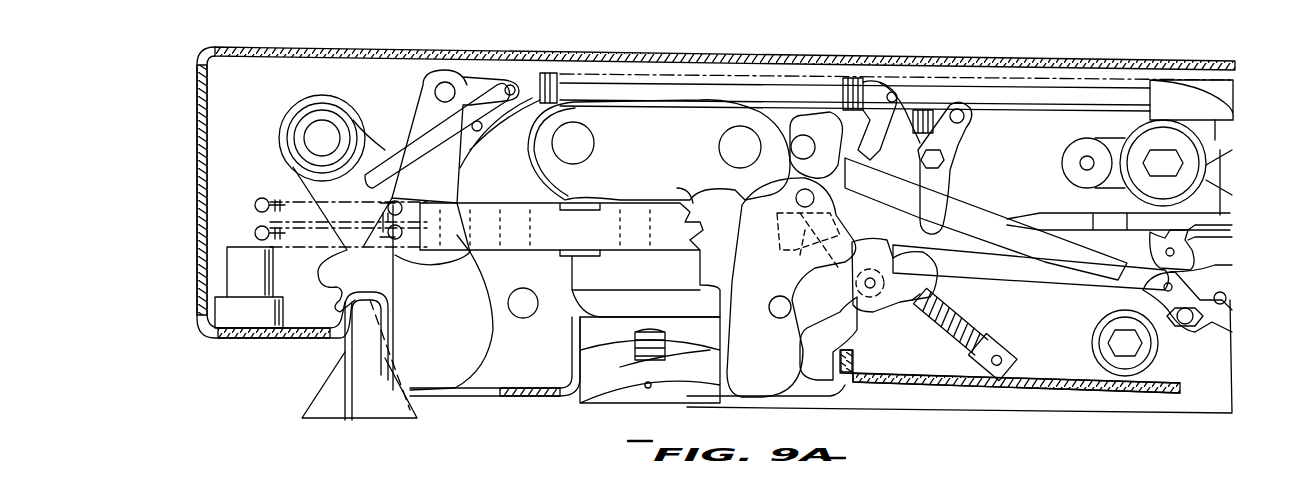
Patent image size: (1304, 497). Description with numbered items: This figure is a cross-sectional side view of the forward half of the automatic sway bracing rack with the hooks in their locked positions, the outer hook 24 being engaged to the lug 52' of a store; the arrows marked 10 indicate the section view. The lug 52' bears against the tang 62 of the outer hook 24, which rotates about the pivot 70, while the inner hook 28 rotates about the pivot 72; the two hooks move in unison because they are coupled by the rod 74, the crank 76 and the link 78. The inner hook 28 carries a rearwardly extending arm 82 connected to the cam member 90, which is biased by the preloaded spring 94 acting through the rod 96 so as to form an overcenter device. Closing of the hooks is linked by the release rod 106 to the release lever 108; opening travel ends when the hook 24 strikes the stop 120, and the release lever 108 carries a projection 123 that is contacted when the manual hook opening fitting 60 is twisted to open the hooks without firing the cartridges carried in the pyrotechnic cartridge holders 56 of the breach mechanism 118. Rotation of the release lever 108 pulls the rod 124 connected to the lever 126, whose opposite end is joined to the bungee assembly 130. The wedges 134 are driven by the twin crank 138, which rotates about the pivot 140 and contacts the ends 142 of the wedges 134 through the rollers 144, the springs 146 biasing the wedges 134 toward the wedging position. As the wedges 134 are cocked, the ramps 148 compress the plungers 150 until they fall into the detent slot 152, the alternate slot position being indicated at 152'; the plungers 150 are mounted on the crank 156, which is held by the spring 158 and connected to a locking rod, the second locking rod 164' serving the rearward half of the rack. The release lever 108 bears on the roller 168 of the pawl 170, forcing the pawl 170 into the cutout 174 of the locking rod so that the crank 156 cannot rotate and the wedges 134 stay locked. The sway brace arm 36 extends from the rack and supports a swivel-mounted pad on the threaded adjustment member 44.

The housing 10 is at (162, 60).
The outer hook 24 is at (460, 361).
The inner hook 28 is at (810, 383).
The sway brace arm 36 is at (607, 402).
The threaded adjustment member 44 is at (668, 340).
The lug 52' is at (374, 372).
The pyrotechnic cartridge holder 56 is at (1175, 193).
The manual hook opening fitting 60 is at (1205, 312).
The tang 62 is at (332, 295).
The pivot 70 is at (430, 260).
The pivot 72 is at (780, 318).
The rod 74 is at (477, 82).
The crank 76 is at (822, 122).
The link 78 is at (770, 180).
The rearwardly extending arm 82 is at (838, 305).
The cam member 90 is at (925, 289).
The preloaded spring 94 is at (968, 310).
The rod 96 is at (912, 303).
The release rod 106 is at (1062, 275).
The release lever 108 is at (1163, 332).
The breach mechanism 118 is at (1215, 182).
The stop 120 is at (523, 318).
The projection 123 is at (1225, 297).
The rod 124 is at (973, 205).
The lever 126 is at (880, 122).
The bungee assembly 130 is at (683, 75).
The wedges 134 is at (547, 242).
The twin crank 138 is at (440, 163).
The pivot 140 is at (477, 132).
The ends of the wedges 142 is at (393, 250).
The rollers 144 is at (377, 200).
The springs 146 is at (280, 205).
The ramps 148 is at (700, 205).
The plungers 150 is at (873, 274).
The detent slots 152 is at (655, 192).
The pawl position 152' is at (798, 250).
The crank 156 is at (948, 172).
The spring 158 is at (935, 120).
The second locking rod 164' is at (1118, 184).
The roller 168 is at (1220, 262).
The pawl 170 is at (1150, 262).
The cutout 174 is at (1215, 232).